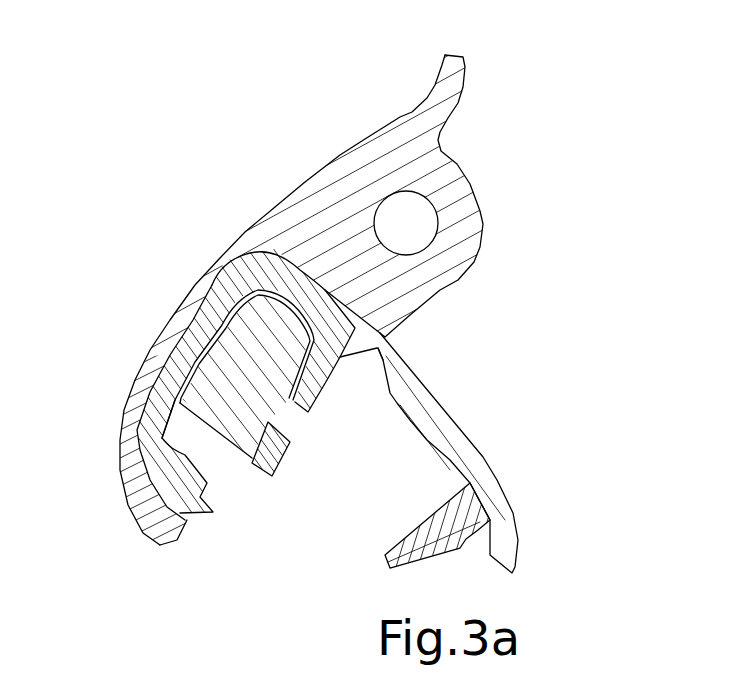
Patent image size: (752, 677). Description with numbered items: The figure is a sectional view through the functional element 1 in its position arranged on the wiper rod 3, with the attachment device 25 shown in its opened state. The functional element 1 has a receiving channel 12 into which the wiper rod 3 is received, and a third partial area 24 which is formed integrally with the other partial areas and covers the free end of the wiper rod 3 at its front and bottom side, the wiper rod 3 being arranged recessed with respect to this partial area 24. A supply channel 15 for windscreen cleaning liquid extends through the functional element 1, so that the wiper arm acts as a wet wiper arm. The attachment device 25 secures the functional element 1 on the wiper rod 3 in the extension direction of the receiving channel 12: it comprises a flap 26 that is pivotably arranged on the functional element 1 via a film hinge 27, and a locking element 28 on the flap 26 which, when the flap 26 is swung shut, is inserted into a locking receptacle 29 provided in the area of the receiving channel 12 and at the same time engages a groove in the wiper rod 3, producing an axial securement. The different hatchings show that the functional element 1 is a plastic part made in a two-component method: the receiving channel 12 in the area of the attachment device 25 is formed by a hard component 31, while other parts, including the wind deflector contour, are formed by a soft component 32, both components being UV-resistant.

The functional element 1 is at (187, 213).
The wiper rod 3 is at (290, 442).
The receiving channel 12 is at (222, 303).
The supply channel 15 is at (410, 231).
The third partial area 24 is at (147, 235).
The attachment device 25 is at (518, 455).
The flap 26 is at (450, 428).
The film hinge 27 is at (380, 352).
The locking element 28 is at (385, 557).
The locking receptacle 29 is at (165, 440).
The hard component 31 is at (258, 267).
The soft component 32 is at (362, 164).